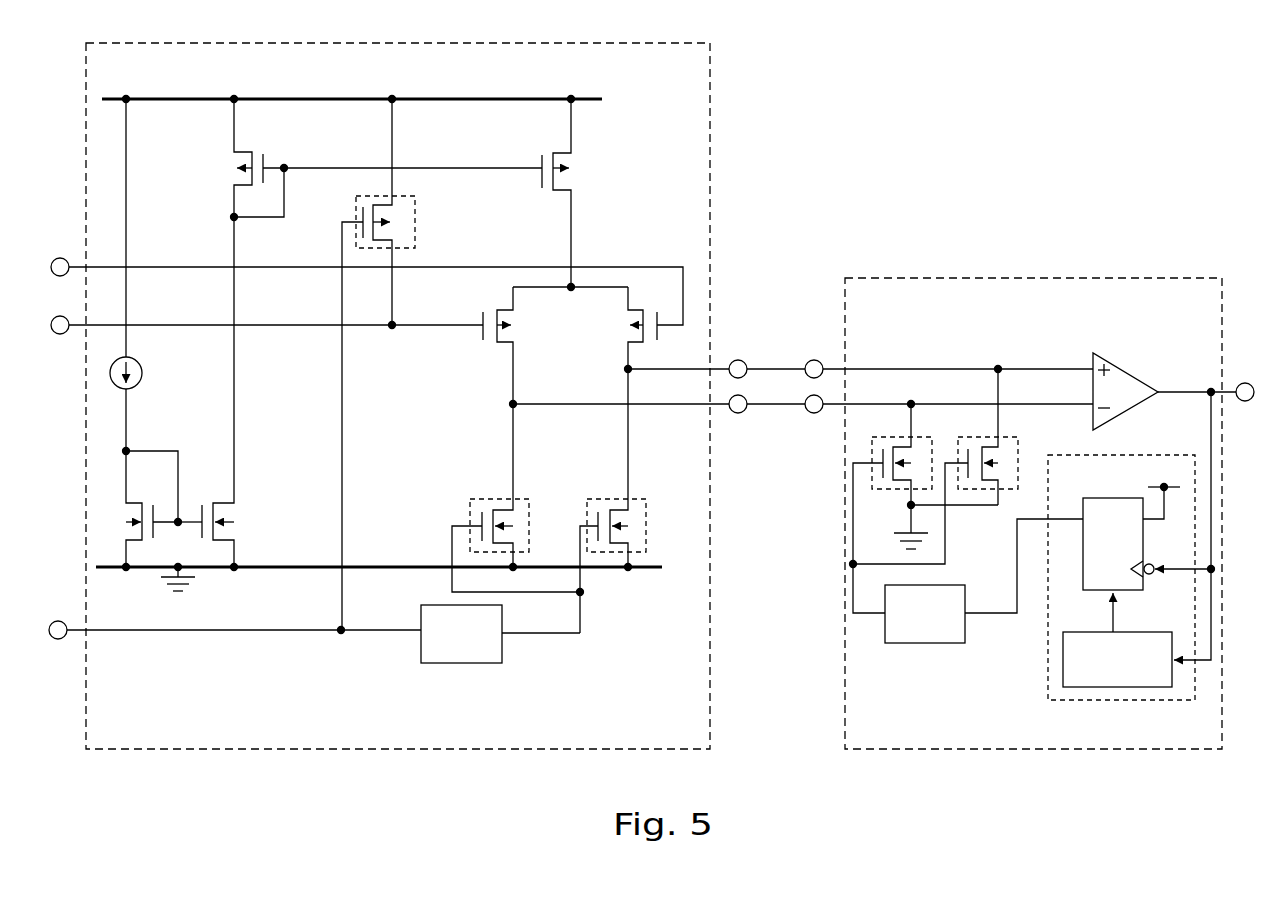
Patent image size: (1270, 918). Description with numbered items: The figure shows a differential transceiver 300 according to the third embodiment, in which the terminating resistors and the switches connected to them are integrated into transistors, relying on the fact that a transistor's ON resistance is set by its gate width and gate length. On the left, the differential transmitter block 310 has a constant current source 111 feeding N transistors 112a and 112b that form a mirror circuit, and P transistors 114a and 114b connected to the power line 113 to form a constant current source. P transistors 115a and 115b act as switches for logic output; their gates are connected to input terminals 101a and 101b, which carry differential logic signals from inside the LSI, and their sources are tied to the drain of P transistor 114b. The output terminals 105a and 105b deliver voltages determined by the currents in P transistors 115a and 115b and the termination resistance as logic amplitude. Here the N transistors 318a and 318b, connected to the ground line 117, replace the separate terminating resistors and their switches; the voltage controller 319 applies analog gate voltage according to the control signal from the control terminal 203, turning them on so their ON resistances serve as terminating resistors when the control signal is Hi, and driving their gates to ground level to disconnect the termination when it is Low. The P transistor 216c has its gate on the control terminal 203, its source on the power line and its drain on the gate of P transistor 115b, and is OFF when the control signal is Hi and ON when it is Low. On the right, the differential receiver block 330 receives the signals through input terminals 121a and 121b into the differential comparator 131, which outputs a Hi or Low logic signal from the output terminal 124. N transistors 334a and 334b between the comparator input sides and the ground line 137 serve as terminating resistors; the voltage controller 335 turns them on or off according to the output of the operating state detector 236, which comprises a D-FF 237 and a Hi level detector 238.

The differential transceiver 300 is at (797, 777).
The differential transmitter block 310 is at (553, 43).
The differential receiver block 330 is at (1143, 278).
The power line 113 is at (432, 97).
The ground line 117 is at (421, 567).
The constant current source 111 is at (143, 371).
The N transistor 112a is at (132, 503).
The N transistor 112b is at (229, 513).
The P transistor 114a is at (241, 152).
The P transistor 114b is at (567, 158).
The P transistor 115a is at (630, 340).
The P transistor 115b is at (493, 312).
The P transistor 216c is at (415, 210).
The input terminal 101a is at (60, 257).
The input terminal 101b is at (60, 335).
The output terminal 105a is at (740, 360).
The output terminal 105b is at (741, 414).
The input terminal 121a is at (814, 360).
The input terminal 121b is at (813, 414).
The output terminal 124 is at (1244, 376).
The differential comparator 131 is at (1133, 373).
The ground line 137 is at (958, 508).
The control terminal 203 is at (60, 640).
The operating state detector 236 is at (1133, 455).
The flip-flop circuit (D-FF) 237 is at (1090, 497).
The Hi level detector 238 is at (1138, 630).
The N transistor 318a is at (633, 499).
The N transistor 318b is at (522, 499).
The voltage controller 319 is at (477, 663).
The N transistor 334a is at (1030, 431).
The N transistor 334b is at (940, 431).
The voltage controller 335 is at (940, 643).